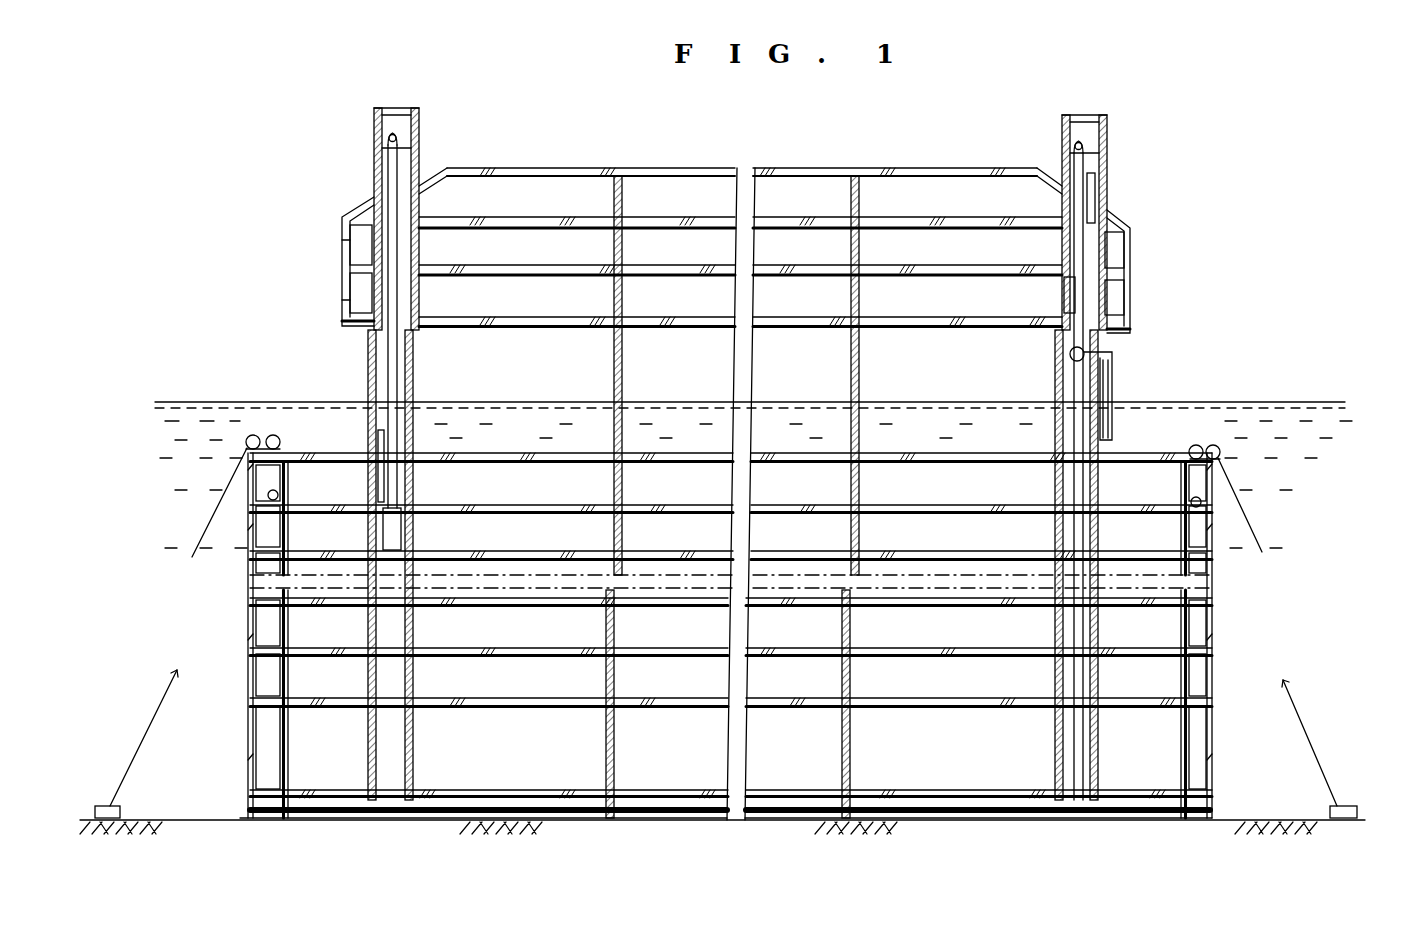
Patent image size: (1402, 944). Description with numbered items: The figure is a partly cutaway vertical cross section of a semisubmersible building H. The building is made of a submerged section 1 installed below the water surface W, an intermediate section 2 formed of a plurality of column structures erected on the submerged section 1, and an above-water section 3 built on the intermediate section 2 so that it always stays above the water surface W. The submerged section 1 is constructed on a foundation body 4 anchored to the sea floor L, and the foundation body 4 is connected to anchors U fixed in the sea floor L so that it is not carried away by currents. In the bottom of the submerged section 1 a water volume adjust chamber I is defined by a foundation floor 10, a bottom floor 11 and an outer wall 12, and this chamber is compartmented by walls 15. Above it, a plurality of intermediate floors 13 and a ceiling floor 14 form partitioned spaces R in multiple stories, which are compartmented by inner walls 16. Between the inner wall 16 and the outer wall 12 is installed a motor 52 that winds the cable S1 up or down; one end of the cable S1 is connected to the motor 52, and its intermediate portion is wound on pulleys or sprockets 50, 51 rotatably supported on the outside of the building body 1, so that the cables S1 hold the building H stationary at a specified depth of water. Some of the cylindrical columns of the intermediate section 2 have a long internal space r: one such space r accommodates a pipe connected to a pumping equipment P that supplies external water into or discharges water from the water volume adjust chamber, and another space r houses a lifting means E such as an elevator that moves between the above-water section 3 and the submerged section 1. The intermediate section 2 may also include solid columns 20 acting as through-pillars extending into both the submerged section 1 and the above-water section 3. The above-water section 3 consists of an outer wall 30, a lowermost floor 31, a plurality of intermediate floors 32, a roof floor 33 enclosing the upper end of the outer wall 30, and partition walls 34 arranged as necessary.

The submerged section 1 is at (249, 636).
The intermediate section 2 is at (365, 371).
The above-water section 3 is at (338, 296).
The foundation body 4 is at (246, 817).
The foundation floor 10 is at (526, 784).
The bottom floor 11 is at (464, 706).
The outer wall 12 is at (252, 684).
The intermediate floors 13 is at (470, 514).
The ceiling floor 14 is at (518, 456).
The walls 15 is at (601, 775).
The inner walls 16 is at (358, 496).
The solid columns 20 is at (632, 358).
The outer wall 30 is at (340, 257).
The lowermost floor 31 is at (686, 314).
The intermediate floors 32 is at (810, 220).
The roof floor 33 is at (533, 168).
The partition walls 34 is at (632, 248).
The pulley or sprocket 50 is at (210, 439).
The pulley or sprocket 51 is at (274, 443).
The motor 52 is at (262, 496).
The water surface W is at (256, 434).
The partitioned spaces R is at (736, 443).
The lifting means E is at (380, 542).
The pumping equipment P is at (1068, 354).
The internal space r is at (402, 360).
The semisubmersible building H is at (1153, 320).
The sea floor L is at (169, 815).
The anchors U is at (108, 804).
The cables S1 is at (160, 696).
The water volume adjust chamber I is at (681, 760).